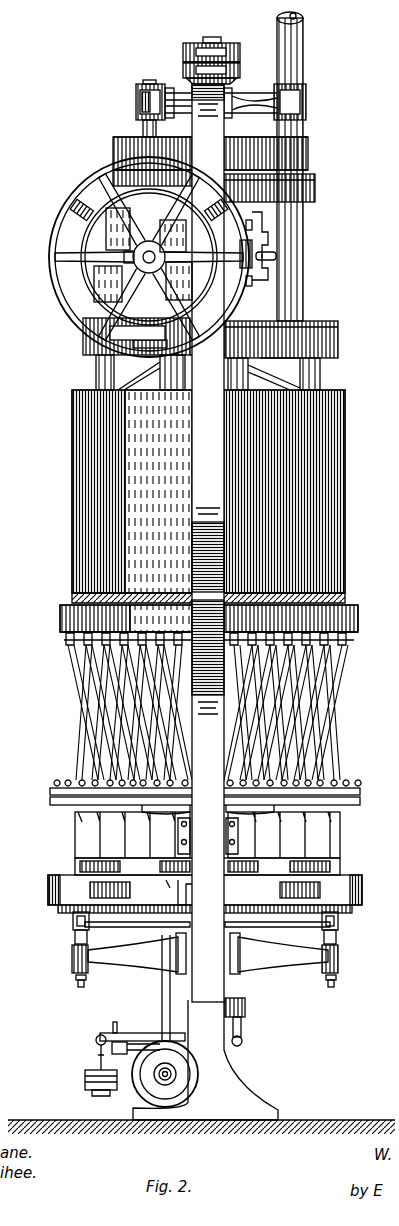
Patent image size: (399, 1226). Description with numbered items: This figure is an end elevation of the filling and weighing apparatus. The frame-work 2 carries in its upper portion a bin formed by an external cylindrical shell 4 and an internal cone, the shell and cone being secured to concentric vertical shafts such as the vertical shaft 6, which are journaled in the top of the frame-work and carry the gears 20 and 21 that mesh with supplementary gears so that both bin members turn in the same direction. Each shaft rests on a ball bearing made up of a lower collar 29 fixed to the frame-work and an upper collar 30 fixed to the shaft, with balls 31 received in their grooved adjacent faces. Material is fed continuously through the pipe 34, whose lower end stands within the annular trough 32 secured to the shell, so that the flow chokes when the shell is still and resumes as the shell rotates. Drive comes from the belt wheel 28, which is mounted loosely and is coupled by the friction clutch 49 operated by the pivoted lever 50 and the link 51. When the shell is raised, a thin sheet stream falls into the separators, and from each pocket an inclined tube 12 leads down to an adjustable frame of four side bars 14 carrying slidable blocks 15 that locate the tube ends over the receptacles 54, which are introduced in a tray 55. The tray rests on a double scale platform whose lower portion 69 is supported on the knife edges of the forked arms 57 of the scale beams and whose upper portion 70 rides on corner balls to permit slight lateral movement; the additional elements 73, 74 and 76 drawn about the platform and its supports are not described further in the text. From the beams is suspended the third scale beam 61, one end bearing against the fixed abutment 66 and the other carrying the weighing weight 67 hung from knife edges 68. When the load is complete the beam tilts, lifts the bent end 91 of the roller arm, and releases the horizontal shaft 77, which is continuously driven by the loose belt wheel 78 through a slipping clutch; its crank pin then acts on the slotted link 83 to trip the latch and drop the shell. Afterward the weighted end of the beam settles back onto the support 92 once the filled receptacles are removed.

The frame-work 2 is at (208, 543).
The external cylindrical shell 4 is at (344, 501).
The vertical shaft 6 is at (207, 38).
The inclined tube 12 is at (90, 710).
The side bars 14 is at (362, 808).
The blocks 15 is at (362, 790).
The gear 20 is at (309, 156).
The gear 21 is at (316, 190).
The belt wheel 28 is at (131, 257).
The lower collar 29 is at (241, 68).
The upper collar 30 is at (241, 49).
The balls 31 is at (184, 59).
The annular trough 32 is at (339, 342).
The pipe 34 is at (304, 70).
The friction clutch 49 is at (87, 287).
The pivoted lever 50 is at (263, 253).
The link 51 is at (277, 258).
The receptacles 54 is at (345, 832).
The tray 55 is at (78, 863).
The arms 57 is at (128, 918).
The third scale beam 61 is at (138, 1029).
The fixed abutment 66 is at (245, 1031).
The weighing weight 67 is at (85, 1087).
The knife edges 68 is at (96, 1041).
The lower portion of platform 69 is at (355, 909).
The upper portion of platform 70 is at (363, 889).
The bracket 73 is at (187, 891).
The bracket 74 is at (72, 947).
The nut 76 is at (77, 976).
The horizontal shaft 77 is at (173, 1078).
The belt wheel 78 is at (166, 1078).
The link 83 is at (162, 983).
The end of arm 91 is at (114, 1027).
The support 92 is at (112, 1056).